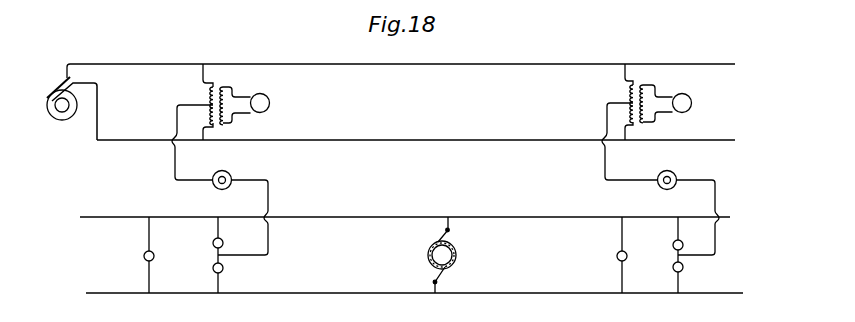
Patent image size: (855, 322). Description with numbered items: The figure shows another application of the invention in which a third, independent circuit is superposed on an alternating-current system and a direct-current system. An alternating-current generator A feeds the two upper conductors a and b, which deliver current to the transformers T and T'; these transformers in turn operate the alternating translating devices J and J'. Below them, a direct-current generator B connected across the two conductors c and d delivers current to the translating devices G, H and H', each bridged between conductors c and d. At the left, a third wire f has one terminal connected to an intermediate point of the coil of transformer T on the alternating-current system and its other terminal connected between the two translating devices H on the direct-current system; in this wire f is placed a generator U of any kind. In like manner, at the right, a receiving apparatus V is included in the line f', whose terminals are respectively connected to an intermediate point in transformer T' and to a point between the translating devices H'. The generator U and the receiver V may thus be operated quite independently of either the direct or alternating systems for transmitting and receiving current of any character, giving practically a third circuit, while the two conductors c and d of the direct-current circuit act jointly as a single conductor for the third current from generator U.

The alternating-current line conductor a is at (401, 61).
The alternating-current line conductor b is at (416, 130).
The direct-current conductor c is at (405, 207).
The direct-current conductor d is at (414, 283).
The alternating-current generator A is at (60, 108).
The transformer T is at (213, 101).
The alternating translating device J is at (249, 105).
The third wire f is at (183, 142).
The generator U is at (241, 202).
The translating device G is at (376, 255).
The translating device H is at (209, 255).
The direct-current generator B is at (449, 255).
The transformer T' is at (638, 101).
The alternating translating device J' is at (673, 103).
The third line f' is at (623, 141).
The receiving apparatus V is at (689, 202).
The translating device H' is at (667, 255).